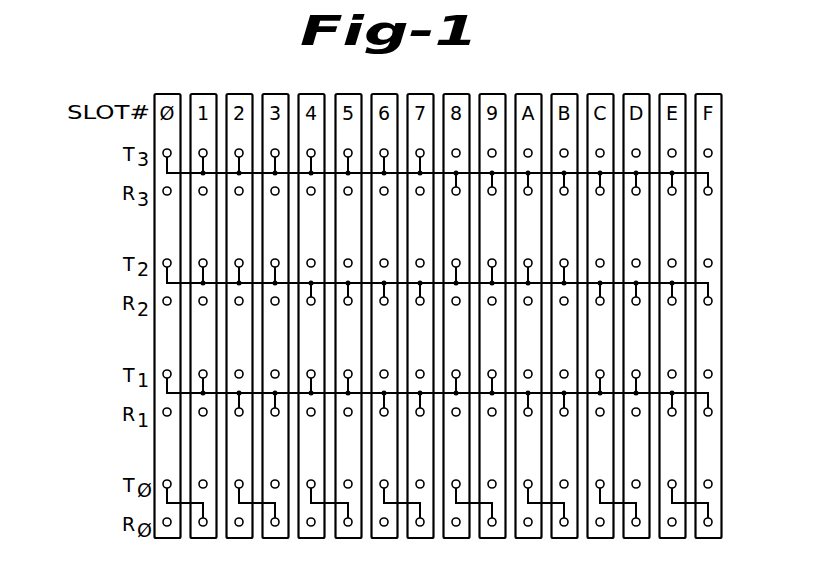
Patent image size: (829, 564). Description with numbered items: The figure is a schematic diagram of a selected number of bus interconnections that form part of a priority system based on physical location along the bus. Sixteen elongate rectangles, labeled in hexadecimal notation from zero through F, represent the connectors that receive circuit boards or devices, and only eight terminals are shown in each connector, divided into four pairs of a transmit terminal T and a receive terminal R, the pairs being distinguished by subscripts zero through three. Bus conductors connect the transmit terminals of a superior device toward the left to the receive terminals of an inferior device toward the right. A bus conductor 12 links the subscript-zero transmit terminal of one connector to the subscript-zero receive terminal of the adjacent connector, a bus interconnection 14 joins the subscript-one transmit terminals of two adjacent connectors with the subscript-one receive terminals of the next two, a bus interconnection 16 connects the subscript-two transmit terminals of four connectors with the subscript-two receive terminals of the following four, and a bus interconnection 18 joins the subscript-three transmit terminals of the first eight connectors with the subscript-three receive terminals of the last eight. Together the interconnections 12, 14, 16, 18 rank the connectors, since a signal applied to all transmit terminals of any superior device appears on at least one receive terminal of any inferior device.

The bus conductor 12 is at (708, 503).
The bus interconnection 14 is at (708, 393).
The bus interconnection 16 is at (708, 283).
The bus interconnection 18 is at (708, 173).